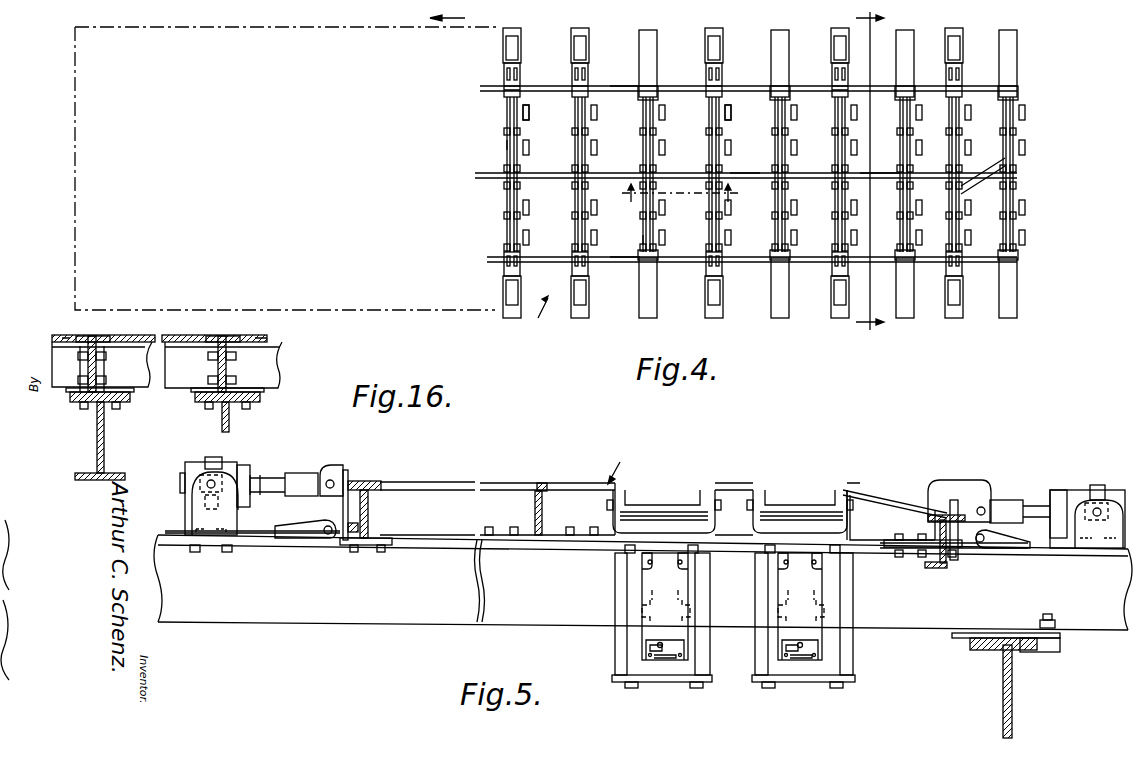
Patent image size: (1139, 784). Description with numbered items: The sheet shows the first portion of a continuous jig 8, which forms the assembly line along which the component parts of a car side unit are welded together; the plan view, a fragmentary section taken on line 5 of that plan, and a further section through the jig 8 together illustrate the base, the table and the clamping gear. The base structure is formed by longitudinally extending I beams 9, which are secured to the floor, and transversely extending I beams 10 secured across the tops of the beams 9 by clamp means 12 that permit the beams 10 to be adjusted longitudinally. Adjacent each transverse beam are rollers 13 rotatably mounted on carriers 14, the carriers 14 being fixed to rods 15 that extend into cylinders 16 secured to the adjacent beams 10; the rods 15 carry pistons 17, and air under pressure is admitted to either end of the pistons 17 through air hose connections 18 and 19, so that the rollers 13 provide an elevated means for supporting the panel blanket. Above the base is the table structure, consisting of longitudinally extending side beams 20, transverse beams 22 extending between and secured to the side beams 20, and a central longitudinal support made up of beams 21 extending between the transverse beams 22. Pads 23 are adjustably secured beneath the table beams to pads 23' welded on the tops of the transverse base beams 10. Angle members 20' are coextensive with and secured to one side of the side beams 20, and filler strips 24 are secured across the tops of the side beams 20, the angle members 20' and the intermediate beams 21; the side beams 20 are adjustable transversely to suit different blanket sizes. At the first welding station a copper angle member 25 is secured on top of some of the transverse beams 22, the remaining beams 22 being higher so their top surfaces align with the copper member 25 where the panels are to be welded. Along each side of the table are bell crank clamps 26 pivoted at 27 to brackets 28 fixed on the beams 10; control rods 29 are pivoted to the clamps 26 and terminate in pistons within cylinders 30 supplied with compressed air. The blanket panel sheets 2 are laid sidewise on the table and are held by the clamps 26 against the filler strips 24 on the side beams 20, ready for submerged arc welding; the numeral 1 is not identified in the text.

In FIG. 5, the conveyor system 1 is at (618, 464).
In FIG. 16, the blanket panel sheets 2 is at (62, 336).
In FIG. 4, the section line 5— 5 is at (878, 172).
In FIG. 4, the jig 8 is at (539, 318).
In FIG. 5, the longitudinally extending I beams 9 is at (1003, 690).
In FIG. 4, the transversely extending I beams 10 is at (589, 33).
In FIG. 16, the transversely extending I beams 10 is at (104, 440).
In FIG. 5, the transversely extending I beams 10 is at (936, 628).
In FIG. 5, the clamp means 12 is at (1050, 652).
In FIG. 4, the rollers 13 is at (529, 113).
In FIG. 5, the rollers 13 is at (678, 496).
In FIG. 5, the carriers 14 is at (756, 525).
In FIG. 5, the rods 15 is at (620, 590).
In FIG. 4, the cylinders 16 is at (675, 193).
In FIG. 5, the cylinders 16 is at (642, 600).
In FIG. 5, the pistons 17 is at (615, 633).
In FIG. 5, the air hose connection 18 is at (646, 562).
In FIG. 5, the air hose connection 19 is at (658, 645).
In FIG. 4, the longitudinally extending side beams 20 is at (622, 188).
In FIG. 5, the longitudinally extending side beams 20 is at (650, 519).
In FIG. 5, the angle members 20' is at (381, 511).
In FIG. 4, the beams 21 is at (748, 177).
In FIG. 16, the beams 21 is at (285, 357).
In FIG. 5, the beams 21 is at (546, 513).
In FIG. 4, the transverse beams 22 is at (522, 93).
In FIG. 16, the transverse beams 22 is at (98, 372).
In FIG. 5, the transverse beams 22 is at (497, 500).
In FIG. 16, the pads 23 is at (163, 400).
In FIG. 5, the pads 23 is at (651, 569).
In FIG. 16, the pads 23' is at (169, 418).
In FIG. 5, the pads 23' is at (653, 569).
In FIG. 4, the filler strips 24 is at (546, 174).
In FIG. 16, the filler strips 24 is at (203, 336).
In FIG. 5, the filler strips 24 is at (362, 480).
In FIG. 4, the angle member 25 is at (506, 146).
In FIG. 16, the angle member 25 is at (87, 362).
In FIG. 5, the angle member 25 is at (440, 491).
In FIG. 5, the bell crank clamps 26 is at (333, 468).
In FIG. 5, the pivot 27 is at (330, 541).
In FIG. 5, the brackets 28 is at (295, 538).
In FIG. 5, the control rods 29 is at (291, 480).
In FIG. 4, the cylinders 30 is at (585, 52).
In FIG. 5, the cylinders 30 is at (232, 465).